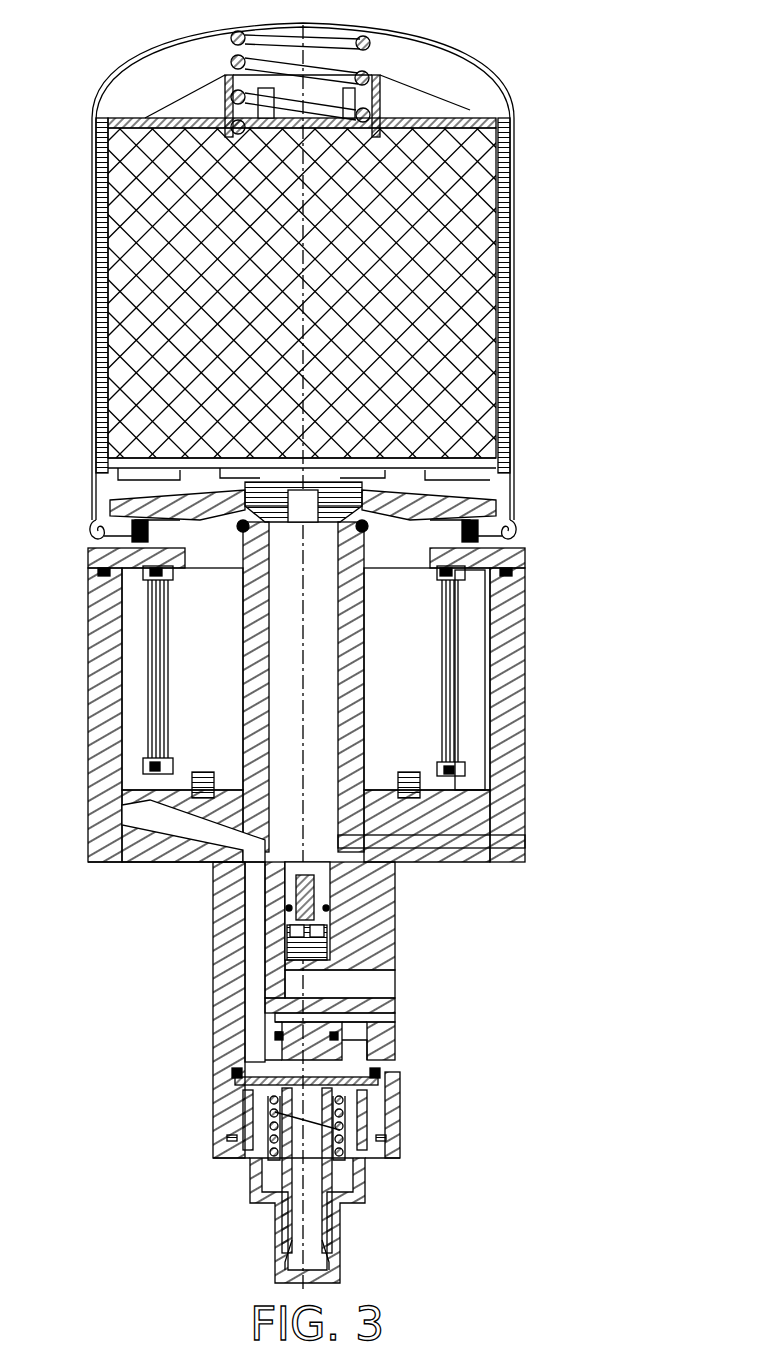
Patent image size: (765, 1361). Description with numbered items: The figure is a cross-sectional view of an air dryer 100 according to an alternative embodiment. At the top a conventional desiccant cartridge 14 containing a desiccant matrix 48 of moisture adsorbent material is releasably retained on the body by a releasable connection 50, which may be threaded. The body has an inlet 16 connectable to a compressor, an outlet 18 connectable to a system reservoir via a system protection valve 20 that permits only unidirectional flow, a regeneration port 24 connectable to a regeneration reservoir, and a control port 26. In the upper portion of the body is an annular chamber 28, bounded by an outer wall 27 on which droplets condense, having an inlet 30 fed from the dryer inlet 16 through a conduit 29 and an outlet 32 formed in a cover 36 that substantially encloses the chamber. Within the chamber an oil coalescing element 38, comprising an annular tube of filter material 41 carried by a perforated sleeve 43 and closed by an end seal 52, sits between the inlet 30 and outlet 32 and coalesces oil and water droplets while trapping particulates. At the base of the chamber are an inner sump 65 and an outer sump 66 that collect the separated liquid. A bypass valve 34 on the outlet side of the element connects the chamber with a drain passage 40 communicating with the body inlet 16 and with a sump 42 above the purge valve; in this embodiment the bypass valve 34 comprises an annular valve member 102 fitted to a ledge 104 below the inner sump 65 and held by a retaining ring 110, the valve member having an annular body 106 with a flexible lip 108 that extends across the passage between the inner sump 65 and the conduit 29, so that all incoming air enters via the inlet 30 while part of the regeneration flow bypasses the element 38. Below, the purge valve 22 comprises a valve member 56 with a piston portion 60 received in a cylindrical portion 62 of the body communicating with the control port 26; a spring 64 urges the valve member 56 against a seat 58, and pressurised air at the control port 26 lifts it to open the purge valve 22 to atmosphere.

The desiccant cartridge 14 is at (440, 50).
The air dryer 100 is at (536, 67).
The desiccant matrix 48 is at (518, 172).
The releasable connection 50 is at (490, 483).
The outlet 32 is at (500, 510).
The cover 36 is at (526, 554).
The system protection valve 20 is at (326, 845).
The annular chamber 28 is at (128, 610).
The outer wall 27 is at (125, 655).
The inlet 30 is at (130, 787).
The conduit 29 is at (118, 845).
The ledge 104 is at (150, 812).
The bypass valve 34 is at (213, 773).
The annular valve member 102 is at (205, 780).
The regeneration port 24 is at (527, 803).
The outer sump 66 is at (490, 792).
The oil coalescing element 38 is at (434, 628).
The end seal 52 is at (490, 577).
The filter material 41 is at (455, 640).
The perforated sleeve 43 is at (438, 665).
The inner sump 65 is at (399, 775).
The retaining ring 110 is at (412, 770).
The annular body 106 is at (406, 788).
The flexible lip 108 is at (422, 798).
The inlet 16 is at (216, 905).
The drain passage 40 is at (254, 953).
The outlet 18 is at (398, 984).
The control port 26 is at (340, 1016).
The piston portion 60 is at (340, 1036).
The cylindrical portion 62 is at (272, 1022).
The valve member 56 is at (290, 1080).
The sump 42 is at (348, 1080).
The seat 58 is at (372, 1092).
The spring 64 is at (346, 1130).
The purge valve 22 is at (366, 1175).